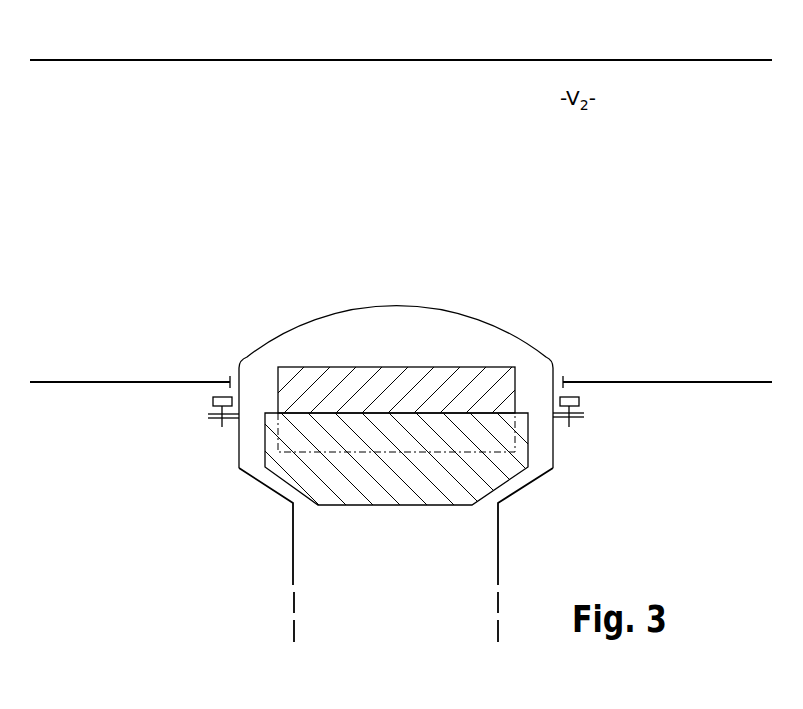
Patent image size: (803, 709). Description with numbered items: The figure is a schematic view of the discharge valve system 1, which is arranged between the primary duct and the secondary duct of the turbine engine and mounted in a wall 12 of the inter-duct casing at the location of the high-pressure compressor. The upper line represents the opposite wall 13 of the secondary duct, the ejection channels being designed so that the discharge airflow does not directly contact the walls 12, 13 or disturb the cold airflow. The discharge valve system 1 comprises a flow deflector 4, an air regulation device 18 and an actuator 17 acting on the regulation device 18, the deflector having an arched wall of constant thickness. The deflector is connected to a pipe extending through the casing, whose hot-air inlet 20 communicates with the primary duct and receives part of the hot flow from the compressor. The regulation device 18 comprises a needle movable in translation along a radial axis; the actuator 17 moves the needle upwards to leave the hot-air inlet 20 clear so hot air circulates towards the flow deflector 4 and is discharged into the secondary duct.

The wall of the secondary duct 13 is at (176, 65).
The wall of the inter-duct casing 12 is at (98, 372).
The discharge valve system 1 is at (192, 296).
The flow deflector 4 is at (313, 306).
The actuator 17 is at (474, 358).
The air regulation device 18 is at (518, 492).
The hot-air inlet 20 is at (490, 646).